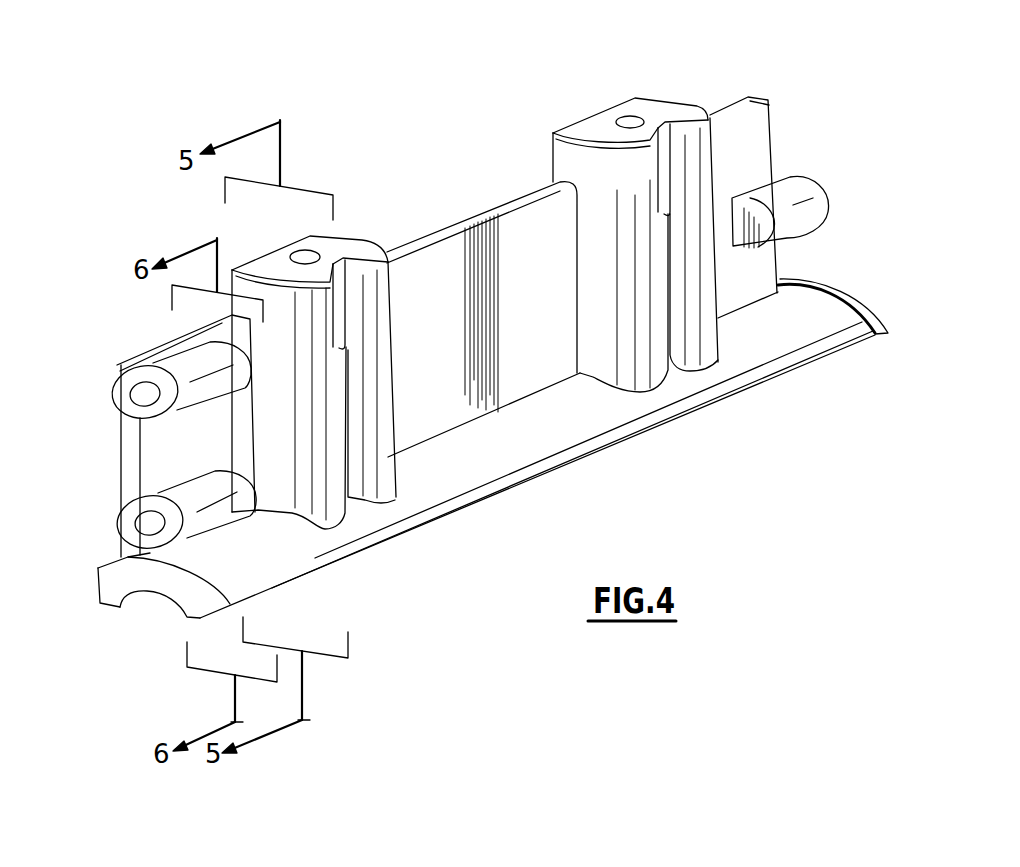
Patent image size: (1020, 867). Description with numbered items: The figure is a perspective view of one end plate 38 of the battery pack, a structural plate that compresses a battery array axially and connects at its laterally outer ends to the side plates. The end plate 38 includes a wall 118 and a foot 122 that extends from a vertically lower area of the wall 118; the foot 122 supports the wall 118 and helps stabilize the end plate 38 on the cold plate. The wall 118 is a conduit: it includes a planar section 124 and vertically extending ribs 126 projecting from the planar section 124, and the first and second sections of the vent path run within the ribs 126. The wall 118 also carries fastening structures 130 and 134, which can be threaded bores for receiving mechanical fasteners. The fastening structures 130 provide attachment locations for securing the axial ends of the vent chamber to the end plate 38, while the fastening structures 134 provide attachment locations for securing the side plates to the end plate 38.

The end plate 38 is at (834, 92).
The wall 118 is at (420, 420).
The foot 122 is at (567, 447).
The planar section 124 is at (560, 348).
The rib 126 is at (650, 353).
The fastening structure 130 is at (340, 297).
The fastening structure 134 is at (120, 390).